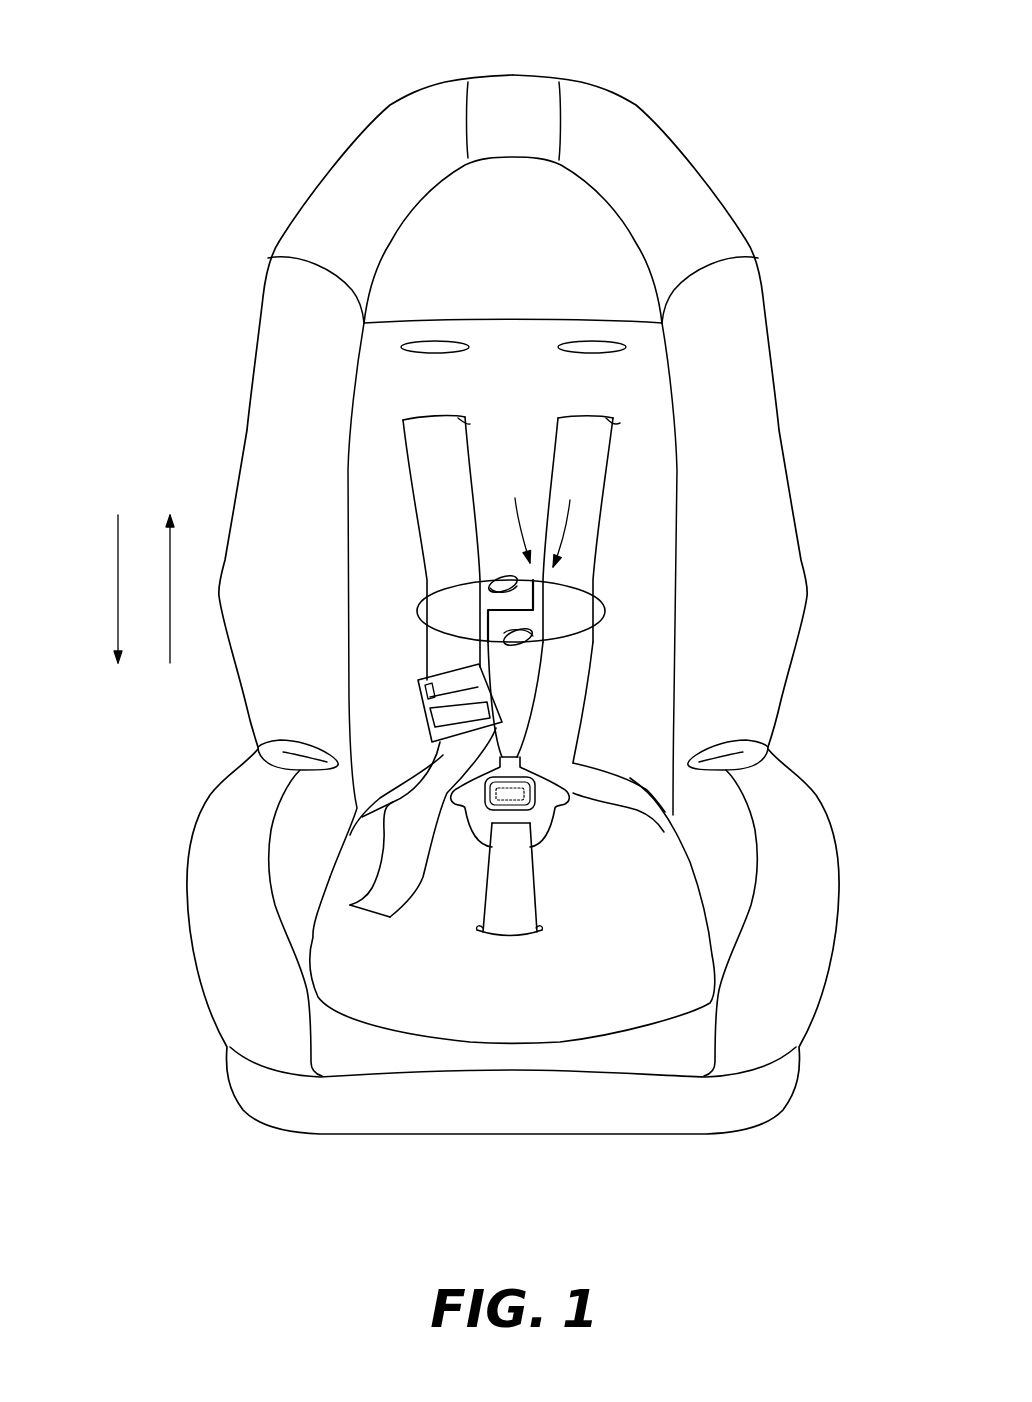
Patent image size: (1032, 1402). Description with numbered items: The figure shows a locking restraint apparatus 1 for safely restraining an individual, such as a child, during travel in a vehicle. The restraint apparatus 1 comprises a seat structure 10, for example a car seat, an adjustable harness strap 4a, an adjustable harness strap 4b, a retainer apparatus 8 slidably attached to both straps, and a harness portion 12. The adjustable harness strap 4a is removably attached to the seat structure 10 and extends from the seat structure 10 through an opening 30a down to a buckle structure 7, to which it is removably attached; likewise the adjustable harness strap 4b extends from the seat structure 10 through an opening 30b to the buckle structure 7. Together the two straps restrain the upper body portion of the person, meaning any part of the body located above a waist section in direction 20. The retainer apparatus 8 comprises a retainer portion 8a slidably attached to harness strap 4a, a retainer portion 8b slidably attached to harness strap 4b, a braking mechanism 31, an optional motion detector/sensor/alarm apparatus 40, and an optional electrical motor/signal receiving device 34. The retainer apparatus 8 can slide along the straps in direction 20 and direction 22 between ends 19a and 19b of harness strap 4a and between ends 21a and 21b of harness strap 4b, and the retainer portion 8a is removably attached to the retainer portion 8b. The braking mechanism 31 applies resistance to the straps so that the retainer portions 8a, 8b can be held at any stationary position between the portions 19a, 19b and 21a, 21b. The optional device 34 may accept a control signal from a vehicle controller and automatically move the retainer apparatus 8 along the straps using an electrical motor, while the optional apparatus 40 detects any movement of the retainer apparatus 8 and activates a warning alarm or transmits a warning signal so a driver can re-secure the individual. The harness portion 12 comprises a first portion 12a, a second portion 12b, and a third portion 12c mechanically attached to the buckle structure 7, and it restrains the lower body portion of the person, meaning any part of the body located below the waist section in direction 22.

The restraint apparatus 1 is at (790, 217).
The seat structure 10 is at (532, 83).
The adjustable harness strap 4a is at (432, 558).
The adjustable harness strap 4b is at (587, 557).
The end of harness strap 4a 19a is at (422, 417).
The end of harness strap 4b 21a is at (613, 420).
The opening 30a is at (467, 422).
The opening 30b is at (615, 419).
The electrical motor/signal receiving device 34 is at (517, 516).
The motion detector/sensor/alarm apparatus 40 is at (571, 518).
The retainer apparatus 8 is at (523, 577).
The retainer portion 8a is at (545, 624).
The retainer portion 8b is at (438, 624).
The braking mechanism 31 is at (503, 650).
The end of harness strap 4a 19b is at (478, 800).
The end of harness strap 4b 21b is at (553, 795).
The buckle structure 7 is at (567, 805).
The harness portion 12 is at (545, 907).
The first portion 12a is at (503, 912).
The second portion 12b is at (628, 787).
The third portion 12c is at (392, 787).
The direction 20 is at (118, 547).
The direction 22 is at (170, 547).